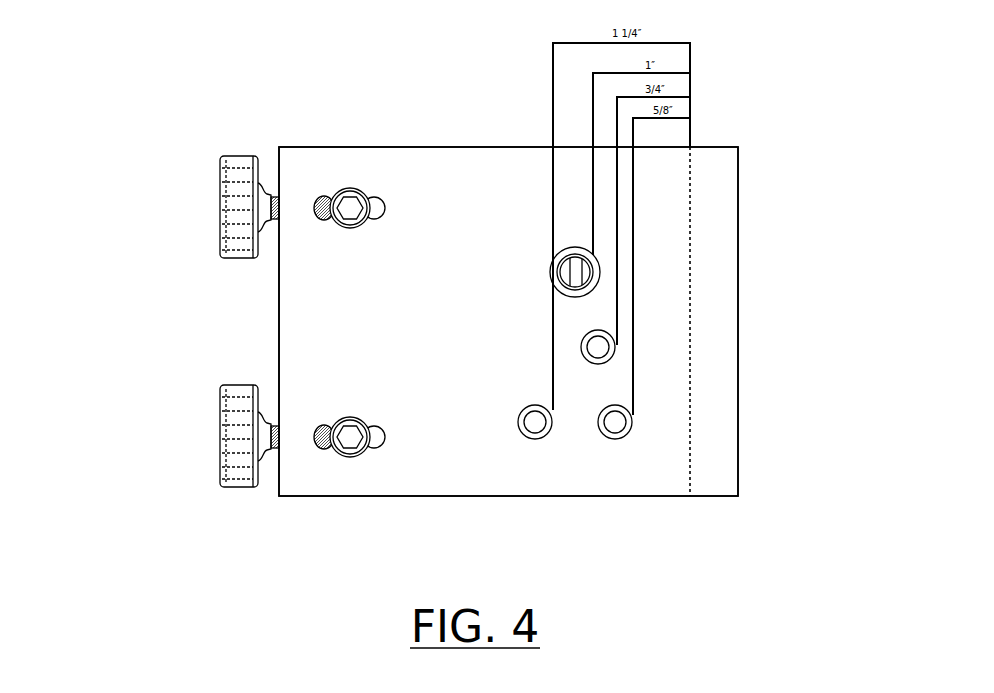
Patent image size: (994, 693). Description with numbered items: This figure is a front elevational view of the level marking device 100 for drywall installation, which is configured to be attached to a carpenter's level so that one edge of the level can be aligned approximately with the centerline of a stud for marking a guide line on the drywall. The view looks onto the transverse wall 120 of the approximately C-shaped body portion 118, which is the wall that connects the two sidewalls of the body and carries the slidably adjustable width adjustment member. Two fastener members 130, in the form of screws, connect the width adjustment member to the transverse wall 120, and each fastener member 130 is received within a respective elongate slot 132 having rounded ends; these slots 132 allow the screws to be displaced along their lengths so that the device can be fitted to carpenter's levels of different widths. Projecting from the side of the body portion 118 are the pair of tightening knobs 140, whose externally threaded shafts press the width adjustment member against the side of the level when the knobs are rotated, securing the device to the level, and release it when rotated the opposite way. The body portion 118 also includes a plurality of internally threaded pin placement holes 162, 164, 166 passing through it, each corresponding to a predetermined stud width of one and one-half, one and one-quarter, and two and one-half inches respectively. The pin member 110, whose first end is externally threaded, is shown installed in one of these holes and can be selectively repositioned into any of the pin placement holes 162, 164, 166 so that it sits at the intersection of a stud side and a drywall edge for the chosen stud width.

The level marking device 100 is at (315, 535).
The pin member 110 is at (573, 253).
The body portion 118 is at (738, 184).
The transverse wall 120 is at (452, 435).
The fastener members 130 is at (350, 188).
The elongate slots 132 is at (378, 208).
The tightening knobs 140 is at (220, 453).
The pin placement hole 162 is at (587, 362).
The pin placement hole 164 is at (607, 438).
The pin placement hole 166 is at (527, 437).